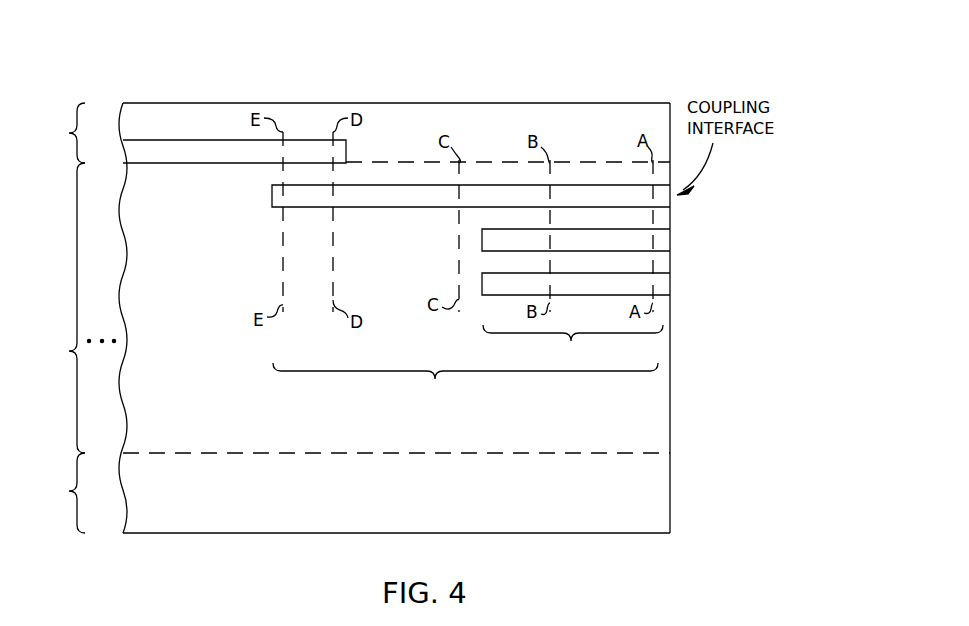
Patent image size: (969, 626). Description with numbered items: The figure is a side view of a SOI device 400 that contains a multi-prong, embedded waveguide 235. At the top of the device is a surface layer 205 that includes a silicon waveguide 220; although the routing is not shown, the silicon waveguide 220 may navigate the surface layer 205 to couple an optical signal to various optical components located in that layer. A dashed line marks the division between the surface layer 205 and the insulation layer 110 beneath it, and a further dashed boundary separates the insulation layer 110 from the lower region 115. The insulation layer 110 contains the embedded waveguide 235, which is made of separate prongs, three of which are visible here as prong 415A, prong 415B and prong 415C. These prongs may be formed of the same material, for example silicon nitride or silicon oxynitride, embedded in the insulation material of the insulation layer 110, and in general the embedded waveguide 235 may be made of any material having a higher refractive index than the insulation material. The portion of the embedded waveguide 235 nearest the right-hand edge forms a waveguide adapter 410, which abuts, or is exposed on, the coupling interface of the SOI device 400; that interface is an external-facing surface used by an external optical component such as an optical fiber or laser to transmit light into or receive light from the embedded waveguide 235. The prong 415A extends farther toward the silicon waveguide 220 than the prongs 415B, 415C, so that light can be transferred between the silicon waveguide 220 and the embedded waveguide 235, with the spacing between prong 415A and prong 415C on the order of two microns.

The SOI device 400 is at (655, 73).
The surface layer 205 is at (67, 133).
The insulation layer 110 is at (67, 351).
The substrate region 115 is at (67, 491).
The silicon waveguide 220 is at (200, 140).
The prong 415A is at (272, 190).
The prong 415B is at (482, 233).
The prong 415C is at (482, 277).
The waveguide adapter 410 is at (573, 346).
The embedded waveguide 235 is at (465, 385).